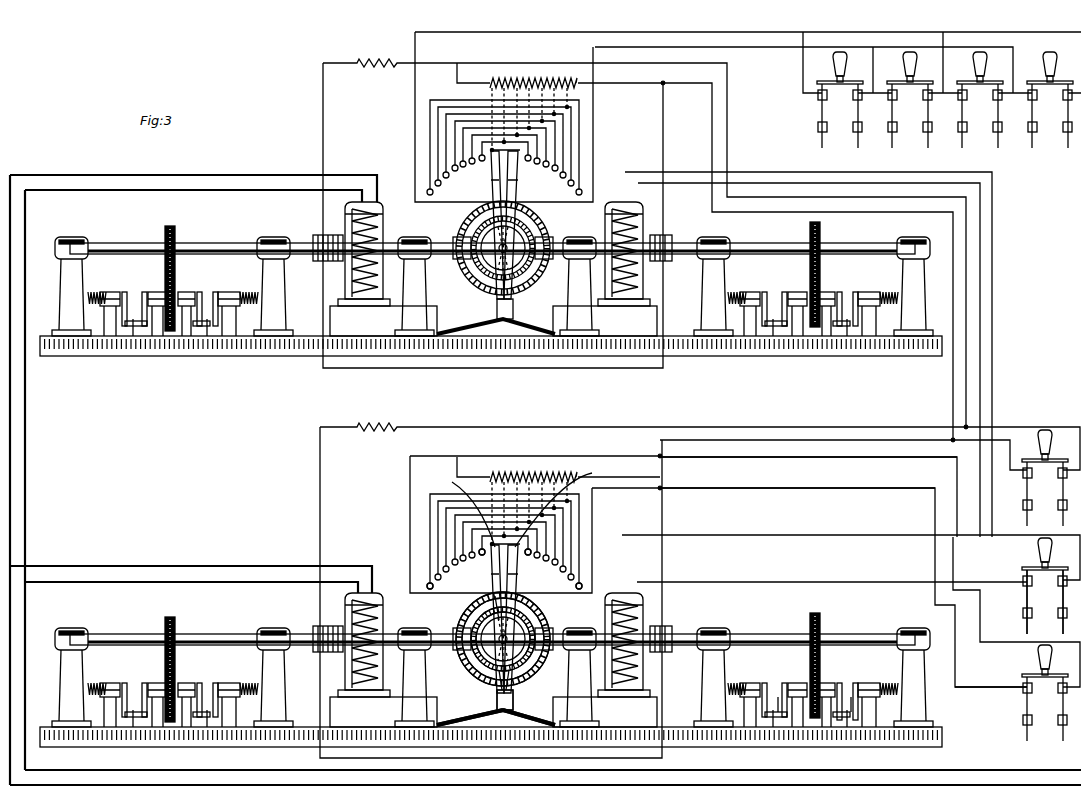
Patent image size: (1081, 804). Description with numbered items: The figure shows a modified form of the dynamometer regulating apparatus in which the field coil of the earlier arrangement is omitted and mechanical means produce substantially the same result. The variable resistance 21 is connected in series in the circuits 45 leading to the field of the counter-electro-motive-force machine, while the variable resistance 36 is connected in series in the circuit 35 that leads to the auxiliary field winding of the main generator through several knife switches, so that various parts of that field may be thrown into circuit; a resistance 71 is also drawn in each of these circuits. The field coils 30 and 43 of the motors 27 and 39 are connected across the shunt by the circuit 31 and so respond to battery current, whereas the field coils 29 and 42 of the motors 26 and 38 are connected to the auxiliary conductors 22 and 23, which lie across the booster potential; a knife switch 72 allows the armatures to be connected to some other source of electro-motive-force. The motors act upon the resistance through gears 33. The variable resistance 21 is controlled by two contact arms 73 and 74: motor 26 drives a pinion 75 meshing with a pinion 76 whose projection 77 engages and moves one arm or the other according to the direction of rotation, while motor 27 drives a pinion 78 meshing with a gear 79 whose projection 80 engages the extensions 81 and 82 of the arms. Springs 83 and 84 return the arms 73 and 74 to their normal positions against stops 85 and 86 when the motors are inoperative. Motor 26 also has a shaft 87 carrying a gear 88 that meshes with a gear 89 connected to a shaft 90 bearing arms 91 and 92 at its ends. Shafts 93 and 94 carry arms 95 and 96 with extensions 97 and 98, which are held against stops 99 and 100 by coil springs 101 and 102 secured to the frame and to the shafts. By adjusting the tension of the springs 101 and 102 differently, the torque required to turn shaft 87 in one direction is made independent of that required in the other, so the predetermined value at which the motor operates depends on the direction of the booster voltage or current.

The variable resistance 21 is at (537, 472).
The conductor of the auxiliary supply circuit 22 is at (1063, 626).
The conductor of the auxiliary supply circuit 23 is at (1027, 626).
The motor 26 is at (632, 612).
The motor 27 is at (374, 592).
The field coil 29 is at (615, 600).
The field coil 30 is at (352, 612).
The circuit 31 is at (258, 770).
The gears 33 is at (975, 33).
The circuit 35 is at (762, 48).
The variable resistance 36 is at (525, 78).
The dynamometer 38 is at (605, 253).
The dynamometer 39 is at (383, 240).
The field coil 42 is at (632, 221).
The field coil 43 is at (334, 246).
The circuit 45 is at (862, 458).
The resistance 71 is at (372, 67).
The knife switch 72 is at (1045, 462).
The contact arm 73 is at (530, 560).
The contact arm 74 is at (480, 560).
The pinion 75 is at (545, 625).
The pinion 76 is at (525, 670).
The projection 77 is at (512, 596).
The pinion 78 is at (472, 660).
The gear 79 is at (477, 675).
The projection 80 is at (497, 705).
The extension 81 is at (498, 690).
The extension 82 is at (512, 700).
The spring 83 is at (470, 728).
The spring 84 is at (530, 728).
The stop 85 is at (561, 502).
The stop 86 is at (463, 510).
The shaft 87 is at (765, 634).
The gear 88 is at (820, 625).
The gear 89 is at (826, 683).
The shaft 90 is at (797, 683).
The arm 91 is at (783, 690).
The arm 92 is at (841, 690).
The shaft 93 is at (763, 690).
The shaft 94 is at (856, 690).
The arm 95 is at (770, 718).
The arm 96 is at (852, 715).
The extension 97 is at (779, 714).
The extension 98 is at (840, 718).
The stop 99 is at (775, 718).
The stop 100 is at (846, 722).
The coil spring 101 is at (735, 683).
The coil spring 102 is at (870, 683).